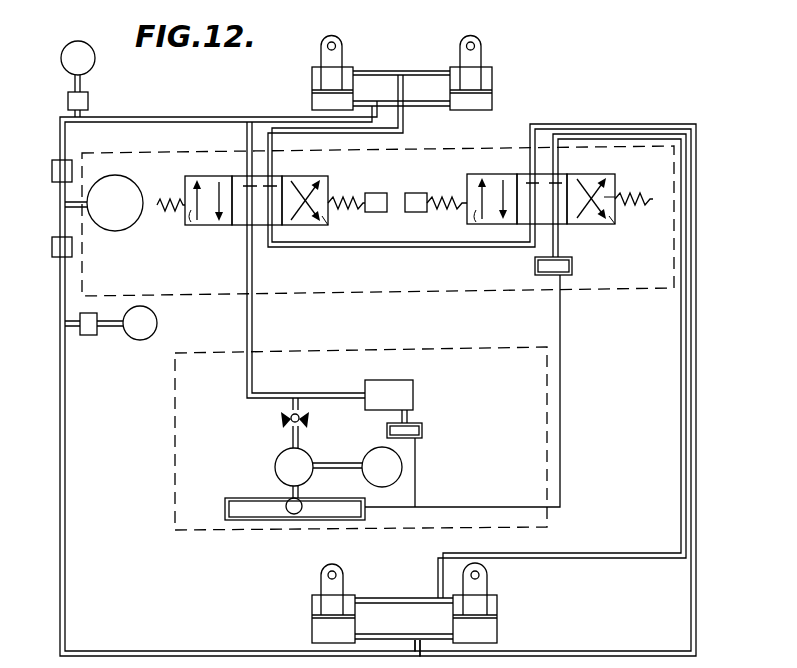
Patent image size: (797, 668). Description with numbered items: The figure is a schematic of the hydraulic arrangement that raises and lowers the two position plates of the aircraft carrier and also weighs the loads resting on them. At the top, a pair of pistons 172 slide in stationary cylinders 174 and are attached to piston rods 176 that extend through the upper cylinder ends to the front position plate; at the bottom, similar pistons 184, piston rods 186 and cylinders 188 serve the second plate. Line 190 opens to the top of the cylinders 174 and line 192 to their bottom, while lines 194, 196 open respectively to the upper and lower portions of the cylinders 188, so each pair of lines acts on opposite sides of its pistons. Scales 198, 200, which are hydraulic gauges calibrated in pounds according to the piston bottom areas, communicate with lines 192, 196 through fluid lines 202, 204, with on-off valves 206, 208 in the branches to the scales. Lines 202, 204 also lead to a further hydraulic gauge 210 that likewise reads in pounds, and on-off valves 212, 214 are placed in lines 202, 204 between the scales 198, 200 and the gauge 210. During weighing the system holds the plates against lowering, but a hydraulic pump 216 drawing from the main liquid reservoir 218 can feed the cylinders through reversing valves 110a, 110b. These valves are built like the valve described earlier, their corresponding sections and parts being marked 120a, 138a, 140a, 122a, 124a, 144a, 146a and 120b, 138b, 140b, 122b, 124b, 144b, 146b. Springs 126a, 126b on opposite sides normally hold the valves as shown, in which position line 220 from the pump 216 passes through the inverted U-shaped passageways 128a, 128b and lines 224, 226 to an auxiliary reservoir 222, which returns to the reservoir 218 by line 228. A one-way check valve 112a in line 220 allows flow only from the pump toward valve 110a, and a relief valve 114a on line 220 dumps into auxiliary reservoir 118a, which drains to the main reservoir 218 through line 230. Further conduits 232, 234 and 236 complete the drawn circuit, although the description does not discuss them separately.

The scale 198 is at (95, 62).
The on-off valve 206 is at (88, 104).
The fluid line 202 is at (58, 128).
The fluid line 204 is at (60, 290).
The on-off valve 212 is at (52, 172).
The on-off valve 214 is at (52, 250).
The hydraulic gauge 210 is at (120, 230).
The spring 126a is at (168, 198).
The reversing valve 110a is at (224, 232).
The first flow passage 120a is at (197, 178).
The second flow passage 140a is at (218, 196).
The first valve position 138a is at (200, 224).
The inverted U-shaped passageway 128a is at (257, 200).
The second valve position 122a is at (292, 172).
The crossed flow passage 144a is at (312, 181).
The return spring 146a is at (331, 197).
The valve element 124a is at (327, 217).
The first flow passage 120b is at (418, 211).
The reversing valve 110b is at (487, 160).
The second flow passage 140b is at (500, 213).
The first valve position 138b is at (480, 223).
The inverted U-shaped passageway 128b is at (543, 199).
The second valve position 122b is at (566, 174).
The crossed flow passage 144b is at (598, 180).
The return spring 146b is at (603, 197).
The spring 126b is at (642, 209).
The valve element 124b is at (614, 225).
The line 226 is at (558, 242).
The auxiliary reservoir 222 is at (572, 270).
The line 224 is at (385, 247).
The pressure line 232 is at (377, 134).
The line 190 is at (412, 71).
The line 192 is at (425, 104).
The cylinders 174 is at (313, 72).
The piston rods 176 is at (341, 43).
The pistons 172 is at (318, 96).
The outer return line 234 is at (563, 123).
The inner line 236 is at (637, 137).
The line 220 is at (254, 322).
The one-way check valve 112a is at (341, 457).
The hydraulic pump 216 is at (280, 457).
The line 230 is at (403, 470).
The main liquid reservoir 218 is at (274, 509).
The relief valve 114a is at (383, 390).
The auxiliary reservoir 118a is at (417, 423).
The line 228 is at (557, 390).
The on-off valve 208 is at (90, 335).
The scale 200 is at (139, 339).
The line 194 is at (397, 596).
The line 196 is at (388, 634).
The cylinders 188 is at (312, 600).
The piston rods 186 is at (345, 586).
The pistons 184 is at (312, 628).